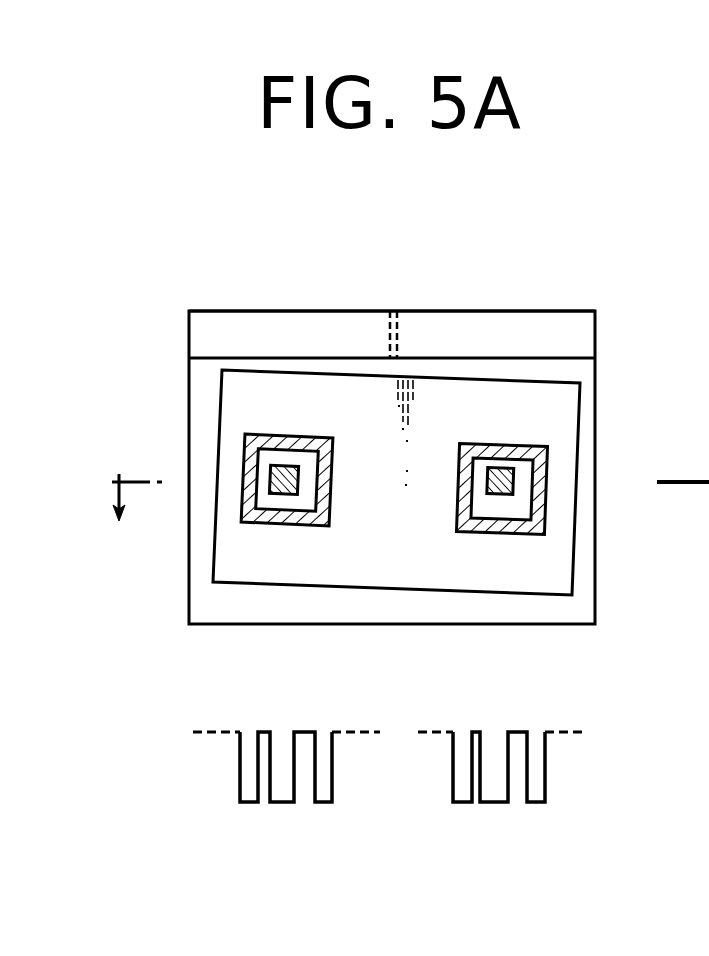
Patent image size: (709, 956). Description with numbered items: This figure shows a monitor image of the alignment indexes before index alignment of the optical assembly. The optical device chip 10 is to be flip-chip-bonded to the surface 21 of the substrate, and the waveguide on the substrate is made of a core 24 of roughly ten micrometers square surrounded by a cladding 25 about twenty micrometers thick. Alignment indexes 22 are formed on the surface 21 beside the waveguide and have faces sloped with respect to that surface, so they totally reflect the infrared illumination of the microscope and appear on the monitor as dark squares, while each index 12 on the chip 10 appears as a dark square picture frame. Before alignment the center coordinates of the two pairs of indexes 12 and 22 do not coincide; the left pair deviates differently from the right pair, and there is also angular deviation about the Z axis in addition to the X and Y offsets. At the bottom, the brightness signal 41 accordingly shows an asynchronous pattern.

The optical device chip 10 is at (285, 372).
The index 12 is at (259, 437).
The surface 21 is at (236, 617).
The alignment index 22 is at (282, 467).
The core 24 is at (403, 338).
The cladding 25 is at (581, 347).
The brightness signal 41 is at (453, 787).